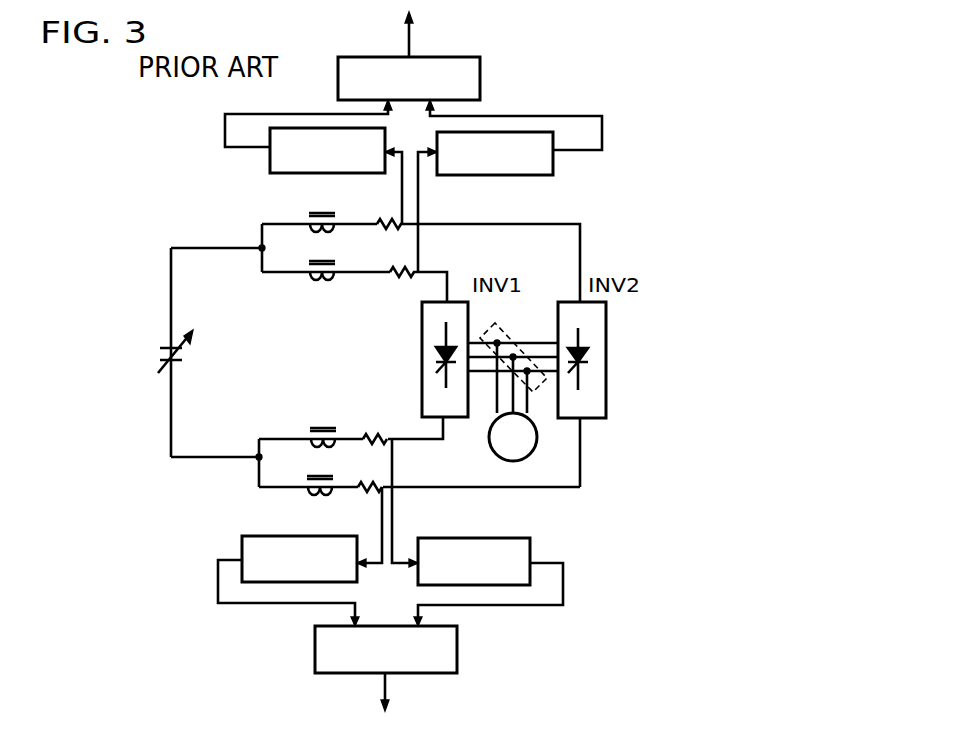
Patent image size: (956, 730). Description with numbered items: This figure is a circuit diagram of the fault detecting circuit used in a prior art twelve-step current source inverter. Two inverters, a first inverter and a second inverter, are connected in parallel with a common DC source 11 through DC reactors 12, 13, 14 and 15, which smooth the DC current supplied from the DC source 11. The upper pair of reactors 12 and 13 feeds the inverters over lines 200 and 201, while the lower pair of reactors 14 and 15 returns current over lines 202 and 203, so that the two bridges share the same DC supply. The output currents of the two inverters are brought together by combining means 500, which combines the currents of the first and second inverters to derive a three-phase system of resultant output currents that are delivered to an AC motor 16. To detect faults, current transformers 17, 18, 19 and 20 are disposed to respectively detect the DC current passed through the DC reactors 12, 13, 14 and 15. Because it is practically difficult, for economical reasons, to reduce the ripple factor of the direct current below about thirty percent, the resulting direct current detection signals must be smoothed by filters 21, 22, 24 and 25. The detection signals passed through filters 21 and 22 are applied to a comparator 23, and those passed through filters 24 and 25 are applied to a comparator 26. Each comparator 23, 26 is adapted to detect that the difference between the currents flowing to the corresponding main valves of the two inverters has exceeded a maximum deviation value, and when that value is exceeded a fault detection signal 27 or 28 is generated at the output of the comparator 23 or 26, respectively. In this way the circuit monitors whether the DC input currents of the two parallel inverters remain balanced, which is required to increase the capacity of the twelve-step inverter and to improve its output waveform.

The DC source 11 is at (183, 353).
The DC reactor 12 is at (325, 209).
The DC reactor 13 is at (325, 257).
The DC reactor 14 is at (327, 424).
The DC reactor 15 is at (325, 473).
The AC motor 16 is at (536, 448).
The current transformer 17 is at (394, 228).
The current transformer 18 is at (395, 278).
The current transformer 19 is at (392, 443).
The current transformer 20 is at (372, 492).
The filter 21 is at (272, 163).
The filter 22 is at (553, 166).
The comparator 23 is at (481, 77).
The filter 24 is at (512, 538).
The filter 25 is at (255, 536).
The comparator 26 is at (459, 648).
The fault detection signal 27 is at (410, 38).
The fault detection signal 28 is at (387, 683).
The inverter unit 200 is at (499, 224).
The supply line 201 is at (360, 276).
The supply line 202 is at (410, 438).
The supply line 203 is at (458, 489).
The combining means 500 is at (514, 348).